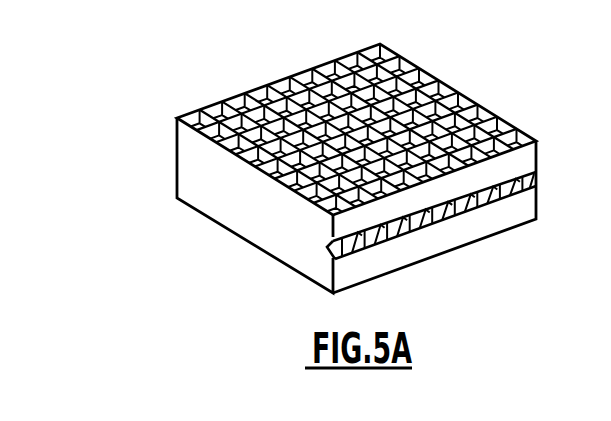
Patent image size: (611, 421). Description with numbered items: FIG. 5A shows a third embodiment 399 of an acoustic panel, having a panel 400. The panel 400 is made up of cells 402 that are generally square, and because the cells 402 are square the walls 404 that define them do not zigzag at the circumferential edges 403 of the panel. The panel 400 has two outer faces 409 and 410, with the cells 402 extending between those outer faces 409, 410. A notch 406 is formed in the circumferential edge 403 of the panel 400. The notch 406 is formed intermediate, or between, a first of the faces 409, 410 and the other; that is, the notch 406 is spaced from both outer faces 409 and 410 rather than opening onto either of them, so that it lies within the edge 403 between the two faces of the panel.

The embodiment 399 is at (522, 58).
The panel 400 is at (256, 225).
The cells 402 is at (193, 112).
The walls 404 is at (221, 107).
The outer face 409 is at (234, 172).
The outer face 410 is at (287, 262).
The circumferential edge 403 is at (500, 168).
The notch 406 is at (350, 258).